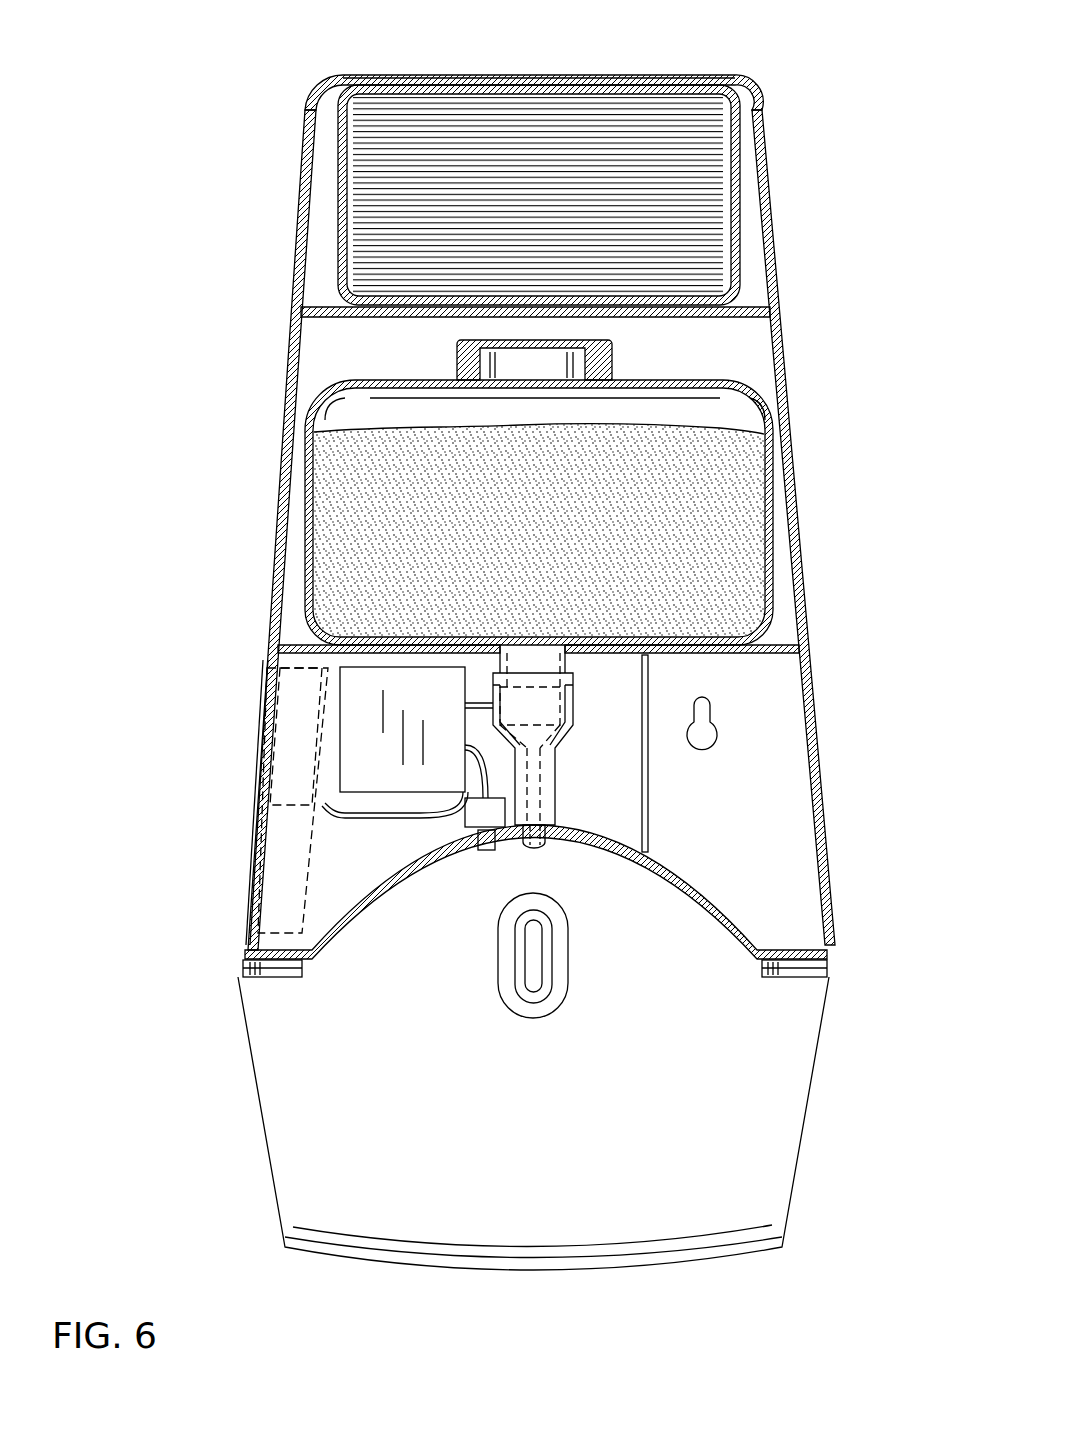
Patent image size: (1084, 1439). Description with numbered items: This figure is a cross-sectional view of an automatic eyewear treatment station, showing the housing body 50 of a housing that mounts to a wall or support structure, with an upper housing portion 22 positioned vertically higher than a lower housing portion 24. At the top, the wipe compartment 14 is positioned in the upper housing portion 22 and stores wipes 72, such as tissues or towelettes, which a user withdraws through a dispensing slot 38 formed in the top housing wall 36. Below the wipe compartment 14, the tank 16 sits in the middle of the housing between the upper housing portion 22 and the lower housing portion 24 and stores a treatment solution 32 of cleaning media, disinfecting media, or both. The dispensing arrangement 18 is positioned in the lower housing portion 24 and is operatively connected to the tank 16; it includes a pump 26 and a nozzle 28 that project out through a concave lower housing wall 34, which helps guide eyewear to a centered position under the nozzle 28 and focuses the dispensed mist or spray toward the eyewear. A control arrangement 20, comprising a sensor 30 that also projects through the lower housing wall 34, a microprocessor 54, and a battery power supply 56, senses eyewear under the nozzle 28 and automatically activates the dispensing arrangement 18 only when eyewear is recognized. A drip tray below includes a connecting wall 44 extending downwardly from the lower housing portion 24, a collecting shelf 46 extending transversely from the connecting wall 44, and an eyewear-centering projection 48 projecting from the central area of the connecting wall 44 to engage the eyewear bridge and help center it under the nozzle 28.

The wipe compartment 14 is at (738, 228).
The tank 16 is at (775, 450).
The dispensing arrangement 18 is at (598, 765).
The control arrangement 20 is at (423, 825).
The upper housing portion 22 is at (245, 203).
The lower housing portion 24 is at (192, 777).
The pump 26 is at (550, 707).
The nozzle 28 is at (562, 876).
The sensor 30 is at (486, 852).
The treatment solution 32 is at (715, 533).
The lower housing wall 34 is at (710, 893).
The top housing wall 36 is at (700, 76).
The dispensing slot 38 is at (452, 78).
The connecting wall 44 is at (360, 1153).
The collecting shelf 46 is at (770, 1243).
The eyewear-centering projection 48 is at (552, 985).
The housing body 50 is at (218, 492).
The microprocessor 54 is at (360, 718).
The battery power supply 56 is at (282, 875).
The wipes 72 is at (668, 178).